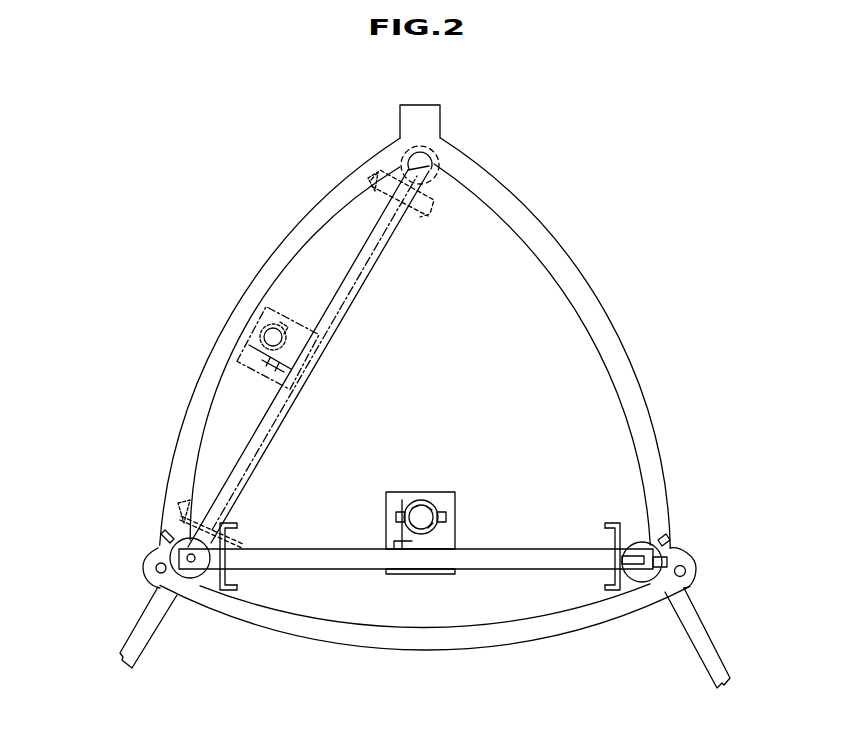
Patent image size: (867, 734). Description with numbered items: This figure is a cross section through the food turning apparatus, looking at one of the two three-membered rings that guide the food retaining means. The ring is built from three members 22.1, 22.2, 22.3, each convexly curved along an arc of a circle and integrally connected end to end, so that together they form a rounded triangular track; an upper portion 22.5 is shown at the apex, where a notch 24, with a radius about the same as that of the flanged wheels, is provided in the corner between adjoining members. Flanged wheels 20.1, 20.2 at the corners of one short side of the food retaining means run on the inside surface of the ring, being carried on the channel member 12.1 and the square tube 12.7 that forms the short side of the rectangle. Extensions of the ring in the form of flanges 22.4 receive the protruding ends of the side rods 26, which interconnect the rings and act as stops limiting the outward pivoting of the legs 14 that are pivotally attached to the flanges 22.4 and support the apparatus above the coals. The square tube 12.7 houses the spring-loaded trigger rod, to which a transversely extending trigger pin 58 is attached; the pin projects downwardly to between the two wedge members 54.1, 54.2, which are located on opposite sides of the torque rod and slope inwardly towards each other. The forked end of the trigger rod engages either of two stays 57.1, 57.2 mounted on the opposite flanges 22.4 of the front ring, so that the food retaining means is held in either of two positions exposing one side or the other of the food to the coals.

The apex portion of frame 22.5 is at (427, 120).
The notch 24 is at (434, 153).
The member of the three-membered ring 22.1 is at (252, 291).
The member of the three-membered ring 22.2 is at (588, 301).
The member of the three-membered ring 22.3 is at (387, 642).
The flange 22.4 is at (148, 559).
The side rod 26 is at (156, 569).
The leg 14 is at (717, 662).
The stay 57.1 is at (670, 541).
The stay 57.2 is at (165, 538).
The flanged wheel 20.1 is at (192, 574).
The flanged wheel 20.2 is at (642, 541).
The channel member 12.1 is at (222, 591).
The square tube 12.7 is at (542, 562).
The wedge member 54.1 is at (446, 513).
The wedge member 54.2 is at (398, 516).
The trigger pin 58 is at (398, 530).